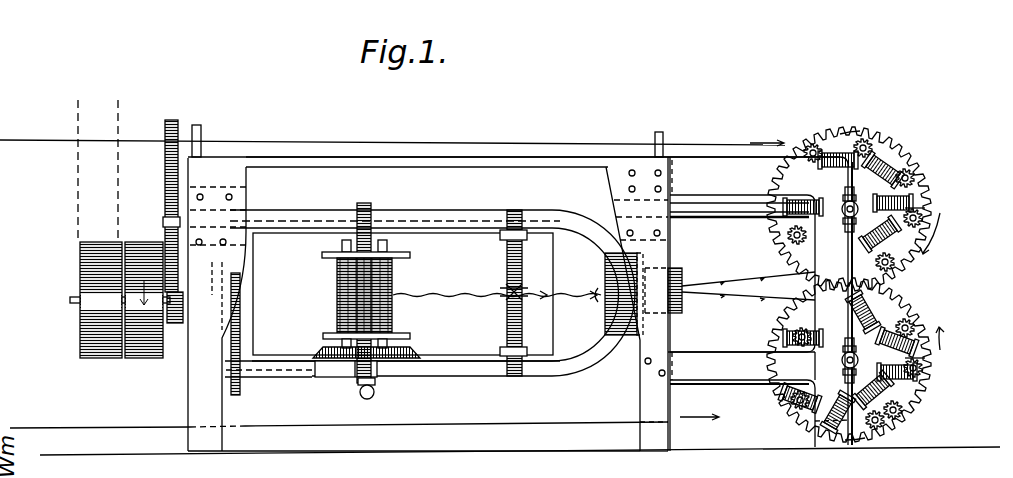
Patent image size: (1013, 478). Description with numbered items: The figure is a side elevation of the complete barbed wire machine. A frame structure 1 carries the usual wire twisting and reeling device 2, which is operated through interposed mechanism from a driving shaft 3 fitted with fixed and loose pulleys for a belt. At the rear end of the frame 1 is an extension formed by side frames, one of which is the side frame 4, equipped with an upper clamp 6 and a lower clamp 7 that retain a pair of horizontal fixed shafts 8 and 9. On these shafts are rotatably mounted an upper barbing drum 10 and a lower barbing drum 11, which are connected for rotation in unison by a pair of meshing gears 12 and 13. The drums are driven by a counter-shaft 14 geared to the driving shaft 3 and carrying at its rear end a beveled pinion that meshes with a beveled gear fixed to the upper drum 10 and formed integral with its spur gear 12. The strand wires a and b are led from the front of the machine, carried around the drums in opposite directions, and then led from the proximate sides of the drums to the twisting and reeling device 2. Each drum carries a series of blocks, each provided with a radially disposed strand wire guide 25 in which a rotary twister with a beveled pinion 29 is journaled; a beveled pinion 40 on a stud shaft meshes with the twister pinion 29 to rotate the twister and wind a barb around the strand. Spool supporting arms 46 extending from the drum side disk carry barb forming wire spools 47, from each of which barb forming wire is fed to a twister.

The frame structure 1 is at (200, 393).
The wire twisting and reeling device 2 is at (390, 301).
The driving shaft 3 is at (75, 300).
The side frame 4 is at (710, 366).
The upper clamp 6 is at (847, 206).
The lower clamp 7 is at (847, 367).
The fixed shaft 8 is at (847, 217).
The fixed shaft 9 is at (847, 357).
The barbing drum 10 is at (862, 209).
The barbing drum 11 is at (865, 360).
The gear 12 is at (872, 134).
The gear 13 is at (893, 428).
The counter-shaft 14 is at (723, 218).
The strand wire guide 25 is at (925, 208).
The beveled pinion 29 is at (925, 175).
The beveled pinion 40 is at (920, 184).
The spool supporting arm 46 is at (867, 167).
The barb forming wire spool 47 is at (905, 158).
The strand wire a is at (509, 146).
The strand wire b is at (477, 432).